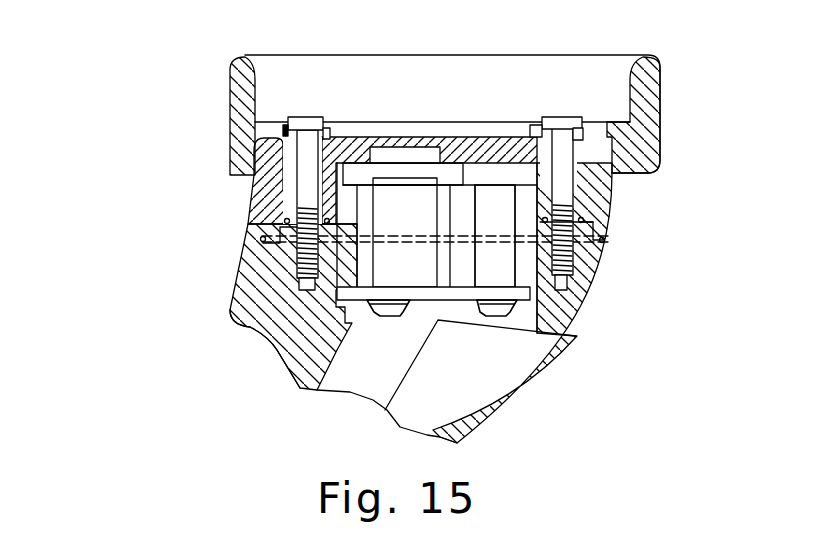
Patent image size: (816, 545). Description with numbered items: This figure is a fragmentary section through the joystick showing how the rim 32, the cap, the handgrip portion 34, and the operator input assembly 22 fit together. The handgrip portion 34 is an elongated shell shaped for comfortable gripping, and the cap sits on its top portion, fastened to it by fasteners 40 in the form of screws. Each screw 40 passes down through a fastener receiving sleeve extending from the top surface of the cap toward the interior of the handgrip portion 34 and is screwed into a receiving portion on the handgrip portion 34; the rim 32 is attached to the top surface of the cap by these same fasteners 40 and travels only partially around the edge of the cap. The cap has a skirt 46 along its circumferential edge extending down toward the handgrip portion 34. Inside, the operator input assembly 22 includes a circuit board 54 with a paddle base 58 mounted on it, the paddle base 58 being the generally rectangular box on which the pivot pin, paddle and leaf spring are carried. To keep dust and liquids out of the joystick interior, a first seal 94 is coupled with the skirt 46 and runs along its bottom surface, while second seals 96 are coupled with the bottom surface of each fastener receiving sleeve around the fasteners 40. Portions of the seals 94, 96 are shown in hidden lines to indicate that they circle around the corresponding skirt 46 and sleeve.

The operator input assembly 22 is at (205, 333).
The rim 32 is at (487, 68).
The handgrip portion 34 is at (312, 358).
The fasteners 40 is at (303, 260).
The skirt 46 is at (267, 185).
The circuit board 54 is at (578, 326).
The paddle base 58 is at (267, 350).
The first seal 94 is at (262, 250).
The second seals 96 is at (287, 222).